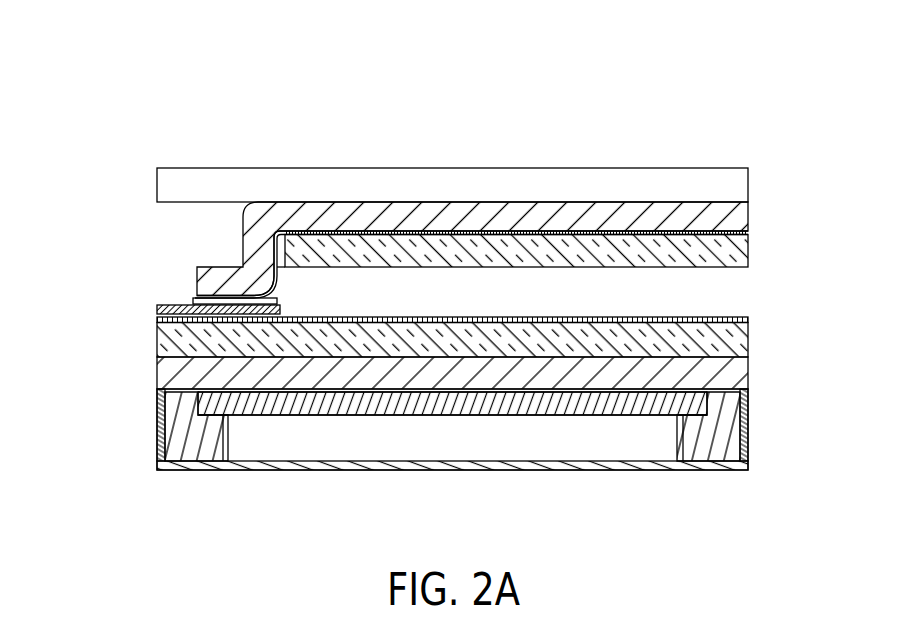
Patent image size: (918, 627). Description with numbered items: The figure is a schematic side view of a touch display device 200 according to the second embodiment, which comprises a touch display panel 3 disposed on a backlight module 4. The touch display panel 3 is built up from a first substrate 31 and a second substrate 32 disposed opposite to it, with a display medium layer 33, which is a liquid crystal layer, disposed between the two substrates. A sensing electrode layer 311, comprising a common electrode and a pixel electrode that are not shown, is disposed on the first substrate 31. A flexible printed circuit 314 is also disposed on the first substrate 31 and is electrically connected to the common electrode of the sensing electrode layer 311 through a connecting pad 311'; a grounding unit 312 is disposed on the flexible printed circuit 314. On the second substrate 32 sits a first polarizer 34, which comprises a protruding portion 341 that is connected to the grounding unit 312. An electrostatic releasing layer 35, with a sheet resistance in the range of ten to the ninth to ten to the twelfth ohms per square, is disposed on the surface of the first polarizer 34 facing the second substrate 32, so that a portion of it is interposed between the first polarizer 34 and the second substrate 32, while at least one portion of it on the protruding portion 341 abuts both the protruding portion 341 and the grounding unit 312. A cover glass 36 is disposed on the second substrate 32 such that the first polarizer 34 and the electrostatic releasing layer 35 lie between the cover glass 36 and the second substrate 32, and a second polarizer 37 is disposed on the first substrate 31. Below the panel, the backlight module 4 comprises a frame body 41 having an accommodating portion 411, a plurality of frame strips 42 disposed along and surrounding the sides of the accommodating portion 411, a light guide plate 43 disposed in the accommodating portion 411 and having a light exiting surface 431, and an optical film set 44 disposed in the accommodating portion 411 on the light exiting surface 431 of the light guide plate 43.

The touch display device 200 is at (84, 71).
The touch display panel 3 is at (70, 152).
The protruding portion 341 is at (285, 316).
The cover glass 36 is at (157, 182).
The electrostatic releasing layer 35 is at (245, 232).
The first polarizer 34 is at (737, 213).
The second substrate 32 is at (280, 257).
The display medium layer 33 is at (282, 290).
The grounding unit 312 is at (195, 298).
The flexible printed circuit 314 is at (162, 311).
The connecting pad 311' is at (417, 322).
The sensing electrode layer 311 is at (417, 343).
The first substrate 31 is at (172, 380).
The second polarizer 37 is at (432, 456).
The backlight module 4 is at (795, 527).
The frame body 41 is at (663, 462).
The accommodating portion 411 is at (748, 438).
The frame strips 42 is at (712, 456).
The light guide plate 43 is at (583, 447).
The light exiting surface 431 is at (443, 416).
The optical film set 44 is at (512, 416).